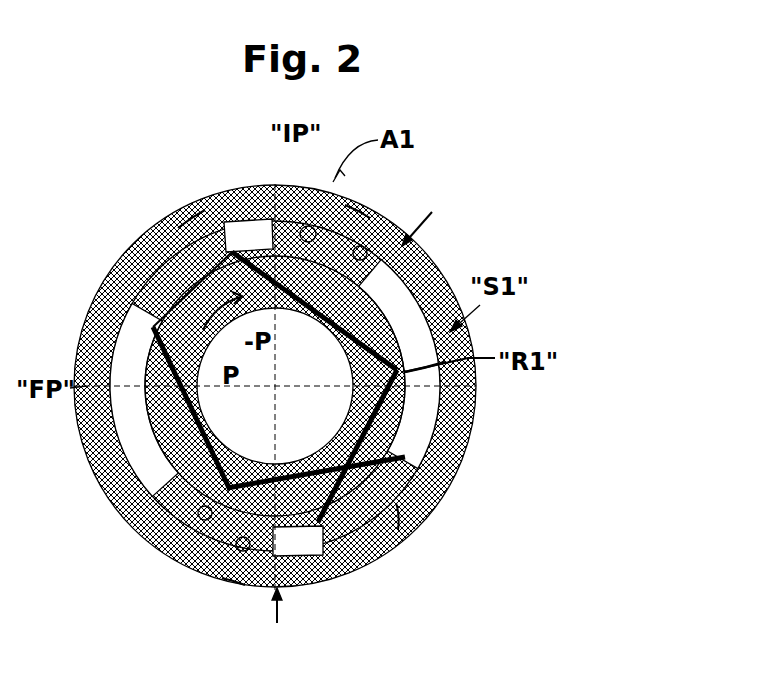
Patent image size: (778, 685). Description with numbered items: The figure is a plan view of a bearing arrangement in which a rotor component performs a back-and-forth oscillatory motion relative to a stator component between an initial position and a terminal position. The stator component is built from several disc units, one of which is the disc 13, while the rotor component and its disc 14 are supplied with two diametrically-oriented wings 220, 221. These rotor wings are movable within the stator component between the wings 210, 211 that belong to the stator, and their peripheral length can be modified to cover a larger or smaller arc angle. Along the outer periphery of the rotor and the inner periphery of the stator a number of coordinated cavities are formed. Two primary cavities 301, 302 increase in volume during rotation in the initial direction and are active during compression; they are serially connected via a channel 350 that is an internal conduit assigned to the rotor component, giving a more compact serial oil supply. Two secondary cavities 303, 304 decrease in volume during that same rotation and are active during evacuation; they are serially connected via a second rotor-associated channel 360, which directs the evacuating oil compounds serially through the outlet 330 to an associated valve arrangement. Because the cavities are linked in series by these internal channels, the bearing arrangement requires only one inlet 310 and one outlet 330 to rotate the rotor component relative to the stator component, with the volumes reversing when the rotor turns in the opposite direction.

The disc 13 is at (455, 487).
The disc 14 is at (343, 412).
The wing 210 is at (345, 205).
The wing 211 is at (222, 578).
The wing 220 is at (178, 228).
The wing 221 is at (398, 530).
The cavity 301 is at (303, 540).
The cavity 302 is at (226, 202).
The cavity 303 is at (462, 432).
The cavity 304 is at (128, 500).
The inlet 310 is at (255, 624).
The outlet 330 is at (445, 227).
The channel 350 is at (356, 350).
The channel 360 is at (268, 456).